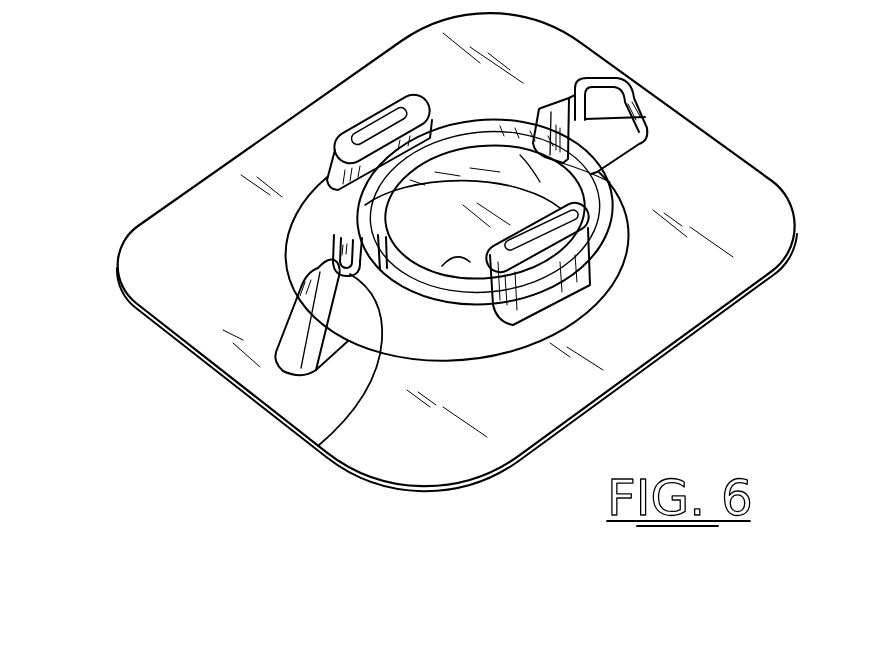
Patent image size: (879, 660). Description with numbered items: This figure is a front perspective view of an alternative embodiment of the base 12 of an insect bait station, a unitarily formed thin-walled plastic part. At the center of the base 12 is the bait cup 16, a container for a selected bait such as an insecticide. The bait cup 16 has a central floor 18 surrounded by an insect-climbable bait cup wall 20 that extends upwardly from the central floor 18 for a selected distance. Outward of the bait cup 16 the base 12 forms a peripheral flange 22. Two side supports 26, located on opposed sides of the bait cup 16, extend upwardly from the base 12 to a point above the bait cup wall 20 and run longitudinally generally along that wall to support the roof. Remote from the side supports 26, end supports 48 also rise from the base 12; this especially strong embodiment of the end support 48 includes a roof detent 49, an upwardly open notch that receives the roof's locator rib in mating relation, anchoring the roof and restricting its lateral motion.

The base 12 is at (163, 282).
The bait cup 16 is at (442, 266).
The central floor 18 is at (453, 246).
The bait cup wall 20 is at (367, 193).
The peripheral flange 22 is at (237, 203).
The side support 26 is at (378, 107).
The end support 48 is at (604, 78).
The roof detent 49 is at (645, 117).